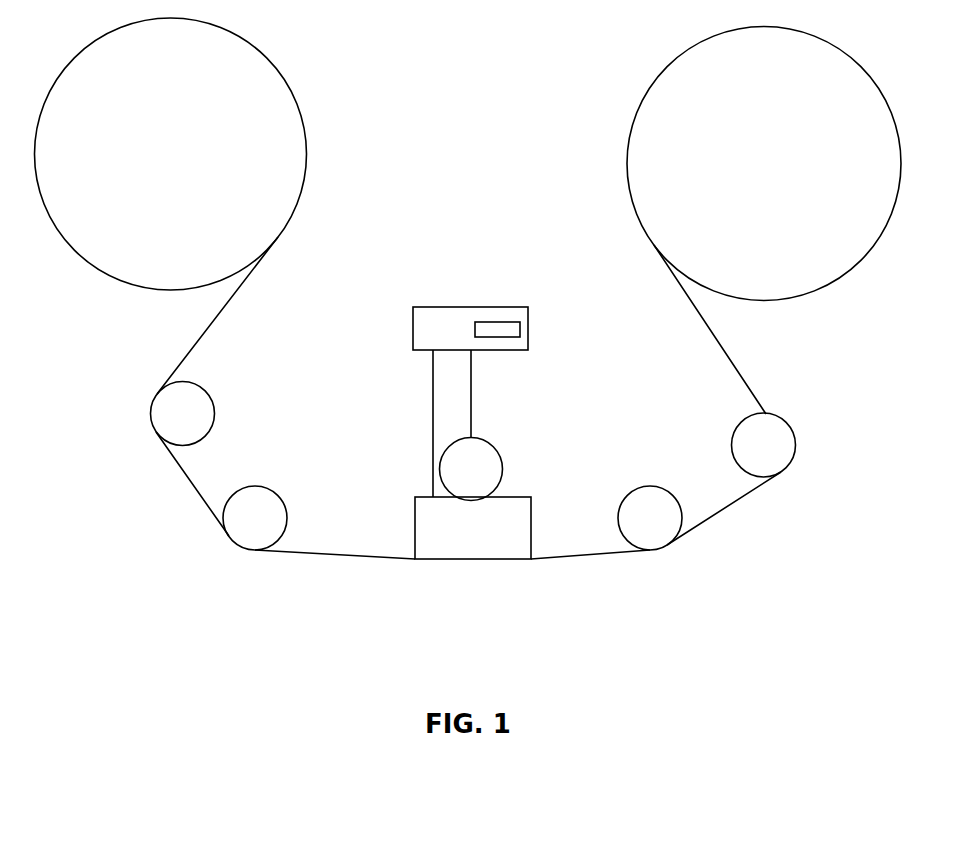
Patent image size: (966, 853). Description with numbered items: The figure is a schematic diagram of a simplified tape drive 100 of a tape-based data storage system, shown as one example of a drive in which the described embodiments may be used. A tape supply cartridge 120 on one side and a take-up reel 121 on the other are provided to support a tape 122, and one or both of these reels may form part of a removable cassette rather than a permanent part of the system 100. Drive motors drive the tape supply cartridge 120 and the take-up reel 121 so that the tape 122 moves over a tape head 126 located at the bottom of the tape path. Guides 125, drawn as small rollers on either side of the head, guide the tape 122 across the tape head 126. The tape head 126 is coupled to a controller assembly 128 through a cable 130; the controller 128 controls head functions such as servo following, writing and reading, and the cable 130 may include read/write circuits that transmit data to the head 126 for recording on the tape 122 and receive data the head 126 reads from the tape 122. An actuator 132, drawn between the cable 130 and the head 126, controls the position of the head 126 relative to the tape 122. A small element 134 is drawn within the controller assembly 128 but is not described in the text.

The web processing system 100 is at (132, 346).
The supply roll 120 is at (307, 127).
The take-up roll 121 is at (851, 273).
The web 122 is at (338, 555).
The guide rollers 125 is at (255, 487).
The base support 126 is at (531, 523).
The head assembly 128 is at (470, 307).
The support arm 130 is at (433, 463).
The contact roller 132 is at (495, 442).
The sensor 134 is at (508, 322).